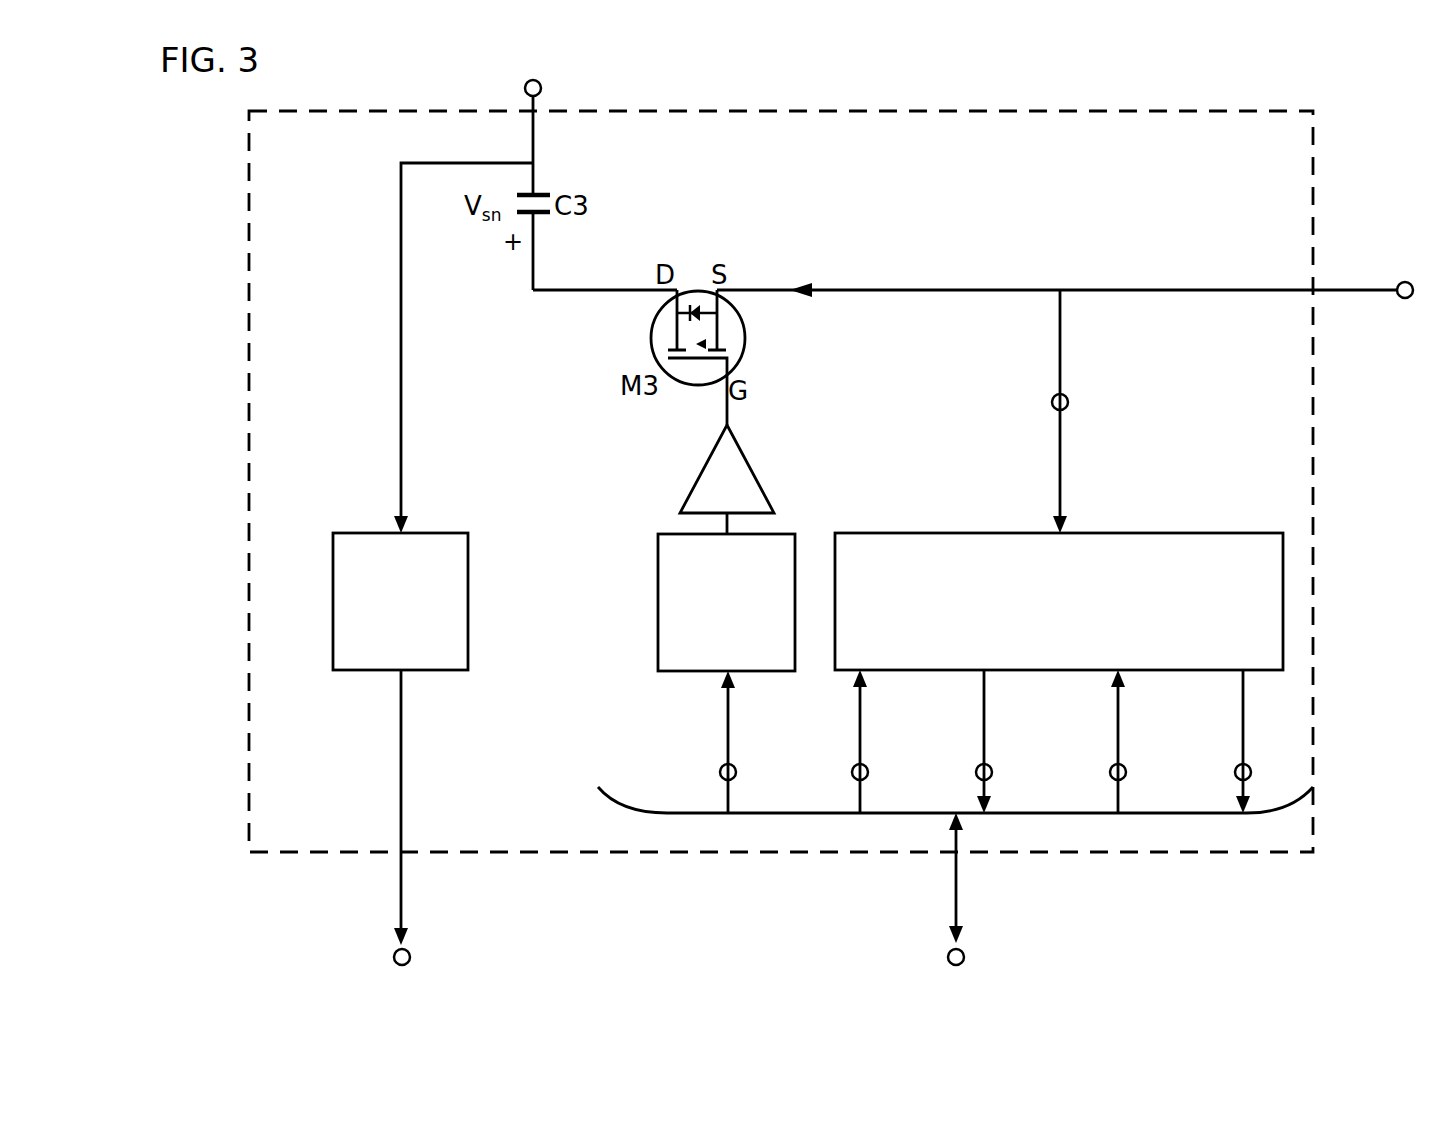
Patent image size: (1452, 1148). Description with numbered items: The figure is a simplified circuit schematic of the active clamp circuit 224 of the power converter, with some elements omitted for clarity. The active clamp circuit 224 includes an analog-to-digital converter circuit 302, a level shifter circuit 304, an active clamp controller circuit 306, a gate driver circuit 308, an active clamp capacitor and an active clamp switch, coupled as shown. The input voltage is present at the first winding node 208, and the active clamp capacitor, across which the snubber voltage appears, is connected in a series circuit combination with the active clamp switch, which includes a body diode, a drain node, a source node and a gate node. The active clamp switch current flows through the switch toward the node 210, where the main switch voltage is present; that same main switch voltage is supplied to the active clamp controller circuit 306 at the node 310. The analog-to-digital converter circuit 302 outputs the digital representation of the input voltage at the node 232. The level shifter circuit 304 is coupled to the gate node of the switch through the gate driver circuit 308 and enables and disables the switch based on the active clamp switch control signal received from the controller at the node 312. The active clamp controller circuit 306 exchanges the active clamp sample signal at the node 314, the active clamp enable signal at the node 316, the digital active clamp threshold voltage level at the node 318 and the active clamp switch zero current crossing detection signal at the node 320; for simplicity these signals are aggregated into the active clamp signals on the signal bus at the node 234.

The first winding node 208 is at (540, 84).
The active clamp circuit 224 is at (781, 481).
The node 210 is at (1400, 297).
The node 310 is at (1067, 396).
The gate driver circuit 308 is at (696, 474).
The analog-to-digital converter circuit 302 is at (433, 416).
The level shifter circuit 304 is at (726, 602).
The active clamp controller circuit 306 is at (1059, 601).
The node 312 is at (720, 775).
The node 314 is at (852, 775).
The node 316 is at (976, 775).
The node 318 is at (1110, 775).
The node 320 is at (1235, 775).
The node 232 is at (409, 952).
The node 234 is at (963, 952).